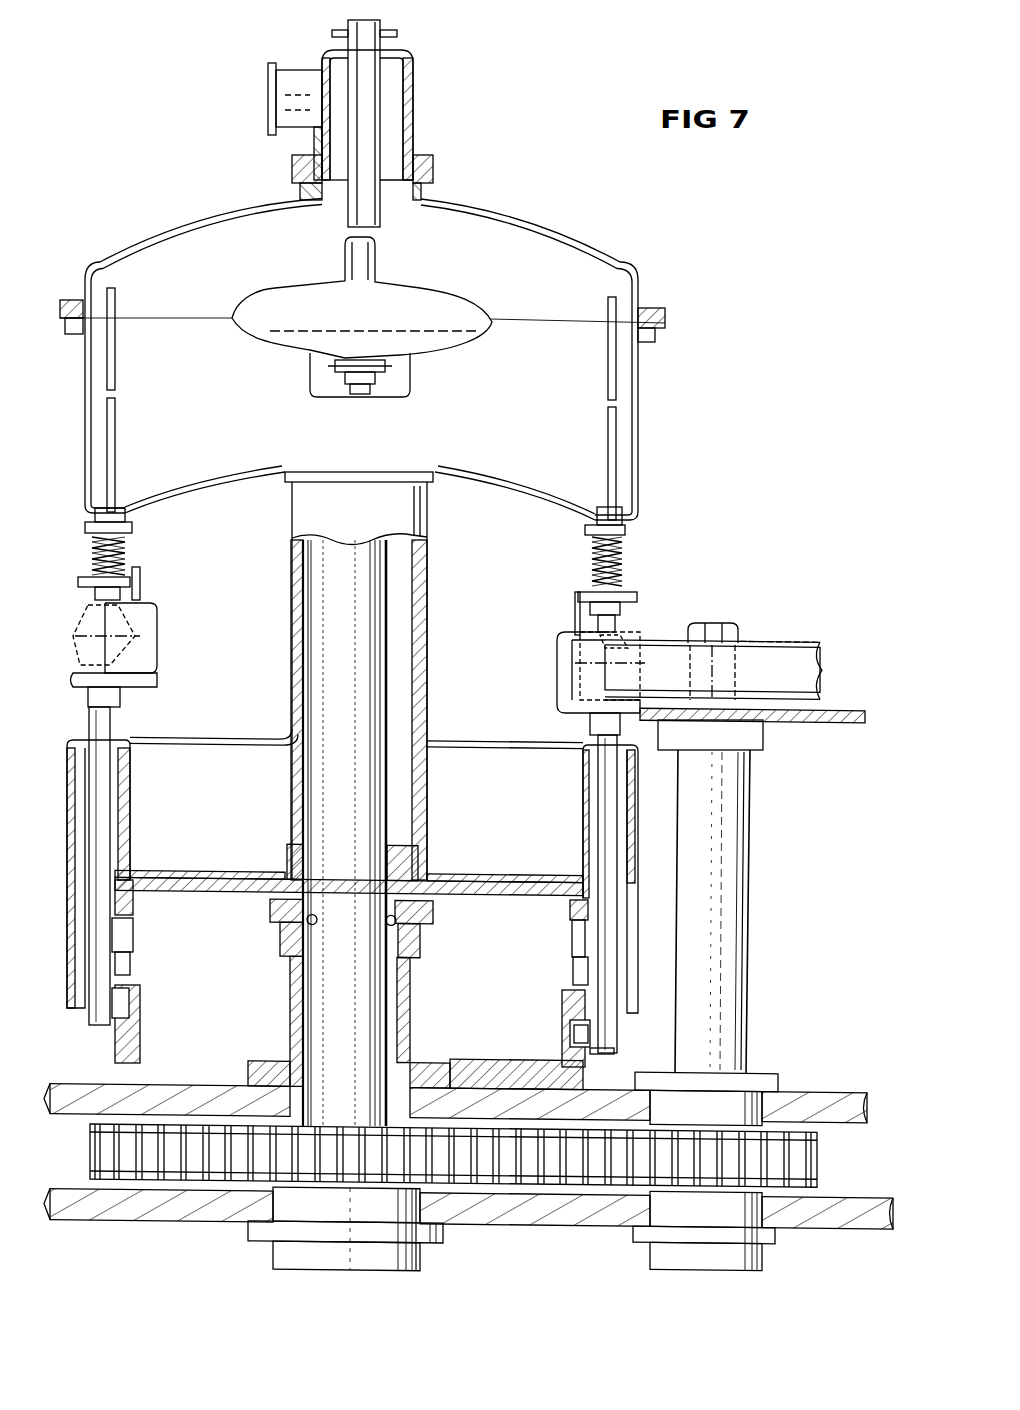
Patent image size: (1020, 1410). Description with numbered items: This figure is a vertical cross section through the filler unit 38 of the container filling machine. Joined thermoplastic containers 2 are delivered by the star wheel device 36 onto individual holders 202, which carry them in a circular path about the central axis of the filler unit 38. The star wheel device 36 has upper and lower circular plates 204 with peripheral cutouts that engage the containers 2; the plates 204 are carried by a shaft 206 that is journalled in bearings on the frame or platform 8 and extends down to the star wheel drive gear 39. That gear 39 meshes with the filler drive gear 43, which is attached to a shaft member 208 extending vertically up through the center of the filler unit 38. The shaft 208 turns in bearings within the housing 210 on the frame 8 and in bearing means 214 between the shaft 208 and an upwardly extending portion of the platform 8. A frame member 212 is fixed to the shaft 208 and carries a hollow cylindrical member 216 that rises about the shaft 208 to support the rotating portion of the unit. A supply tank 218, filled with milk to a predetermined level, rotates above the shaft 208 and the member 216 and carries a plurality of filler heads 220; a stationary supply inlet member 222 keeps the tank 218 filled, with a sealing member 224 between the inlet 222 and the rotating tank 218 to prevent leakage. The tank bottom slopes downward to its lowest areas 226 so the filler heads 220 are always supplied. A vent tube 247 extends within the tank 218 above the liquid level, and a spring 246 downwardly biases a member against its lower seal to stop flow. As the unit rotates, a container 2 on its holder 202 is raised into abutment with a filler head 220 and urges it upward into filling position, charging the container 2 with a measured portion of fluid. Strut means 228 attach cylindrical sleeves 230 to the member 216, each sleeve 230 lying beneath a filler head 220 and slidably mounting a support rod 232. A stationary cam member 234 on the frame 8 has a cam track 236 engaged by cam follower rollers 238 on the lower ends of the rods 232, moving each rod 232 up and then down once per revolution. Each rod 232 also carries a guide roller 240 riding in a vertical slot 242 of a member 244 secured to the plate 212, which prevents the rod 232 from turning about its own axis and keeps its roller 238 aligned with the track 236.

The container 2 is at (618, 650).
The frame or platform 8 is at (470, 1095).
The star wheel device 36 is at (702, 608).
The filler unit 38 is at (441, 72).
The star wheel drive gear 39 is at (818, 1176).
The filler drive gear 43 is at (445, 1165).
The holder 202 is at (150, 680).
The upper and lower circular plates 204 is at (818, 690).
The shaft 206 is at (740, 1090).
The shaft member 208 is at (387, 722).
The housing 210 is at (390, 1258).
The frame member 212 is at (415, 888).
The bearing means 214 is at (318, 922).
The hollow cylindrical member 216 is at (417, 634).
The supply tank 218 is at (604, 258).
The filler heads 220 is at (128, 556).
The supply inlet member 222 is at (320, 85).
The sealing member 224 is at (428, 168).
The lowest areas of tank bottom 226 is at (648, 500).
The strut means 228 is at (522, 875).
The cylindrical members or sleeves 230 is at (583, 796).
The support rod 232 is at (605, 838).
The stationary cam member 234 is at (562, 1000).
The cam track 236 is at (560, 1050).
The cam follower rollers 238 is at (592, 1042).
The guide roller 240 is at (570, 968).
The vertical slot 242 is at (570, 937).
The member 244 is at (568, 914).
The spring 246 is at (592, 557).
The vent tube 247 is at (640, 372).